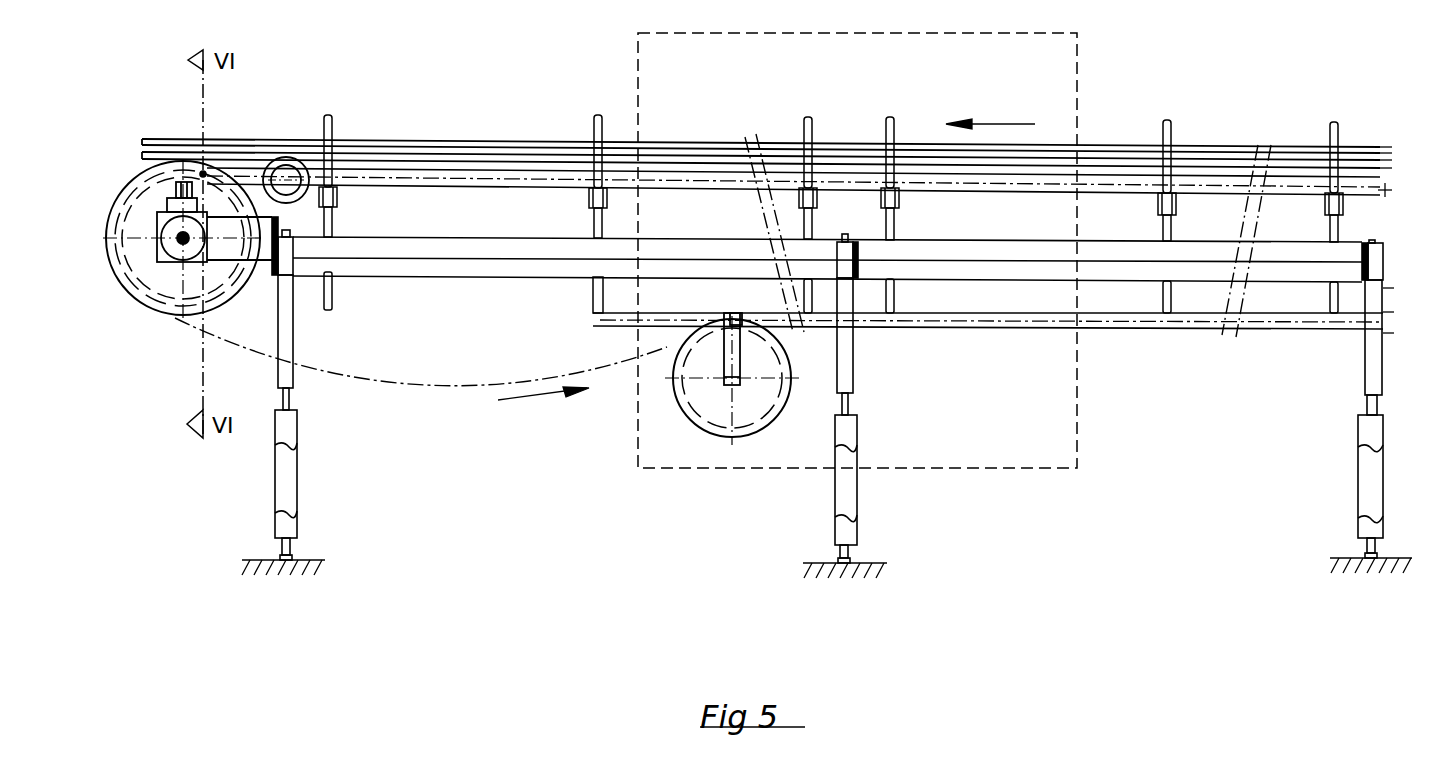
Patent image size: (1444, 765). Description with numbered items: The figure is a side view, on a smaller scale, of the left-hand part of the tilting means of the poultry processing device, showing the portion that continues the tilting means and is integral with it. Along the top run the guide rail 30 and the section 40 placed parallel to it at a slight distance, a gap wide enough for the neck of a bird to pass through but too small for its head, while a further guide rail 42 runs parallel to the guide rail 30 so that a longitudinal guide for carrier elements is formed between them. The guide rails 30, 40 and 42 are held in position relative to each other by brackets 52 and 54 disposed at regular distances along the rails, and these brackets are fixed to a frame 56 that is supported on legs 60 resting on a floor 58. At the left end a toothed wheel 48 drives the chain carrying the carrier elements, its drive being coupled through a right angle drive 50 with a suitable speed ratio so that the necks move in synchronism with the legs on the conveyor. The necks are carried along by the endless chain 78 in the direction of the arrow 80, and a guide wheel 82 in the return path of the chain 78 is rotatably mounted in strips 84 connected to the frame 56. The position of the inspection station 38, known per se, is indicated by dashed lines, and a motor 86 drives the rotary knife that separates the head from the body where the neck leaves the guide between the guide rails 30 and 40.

The guide rail 30 is at (380, 158).
The inspection station 38 is at (640, 52).
The section 40 is at (520, 172).
The guide rail 42 is at (483, 140).
The toothed wheel 48 is at (127, 293).
The right angle drive 50 is at (183, 238).
The bracket 52 is at (808, 115).
The bracket 54 is at (899, 196).
The frame 56 is at (1012, 257).
The floor 58 is at (313, 575).
The leg 60 is at (290, 487).
The endless chain 78 is at (400, 403).
The arrow 80 is at (1000, 122).
The guide wheel 82 is at (707, 420).
The strip 84 is at (737, 385).
The motor 86 is at (282, 160).